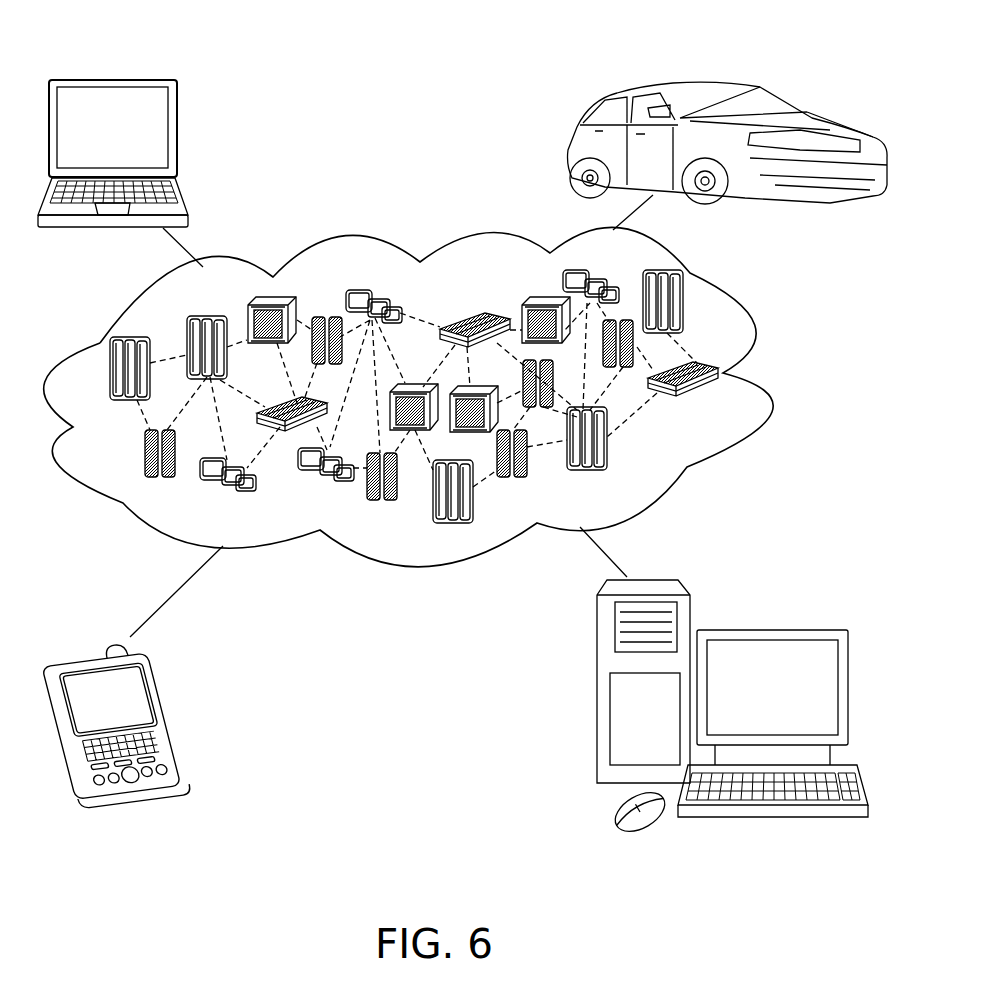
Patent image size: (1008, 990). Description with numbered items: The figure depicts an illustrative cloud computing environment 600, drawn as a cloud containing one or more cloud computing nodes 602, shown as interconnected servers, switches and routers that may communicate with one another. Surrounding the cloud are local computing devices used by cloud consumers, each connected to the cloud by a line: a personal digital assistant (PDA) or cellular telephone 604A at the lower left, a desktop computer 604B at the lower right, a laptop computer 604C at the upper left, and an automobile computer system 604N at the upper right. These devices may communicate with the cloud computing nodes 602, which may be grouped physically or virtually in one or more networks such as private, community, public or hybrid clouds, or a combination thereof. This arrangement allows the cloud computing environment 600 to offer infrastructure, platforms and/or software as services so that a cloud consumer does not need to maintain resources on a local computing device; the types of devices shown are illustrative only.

The cloud computing environment 600 is at (725, 372).
The cloud computing nodes 602 is at (717, 402).
The personal digital assistant (PDA) or cellular telephone 604A is at (153, 683).
The desktop computer 604B is at (760, 630).
The laptop computer 604C is at (177, 112).
The automobile computer system 604N is at (575, 152).